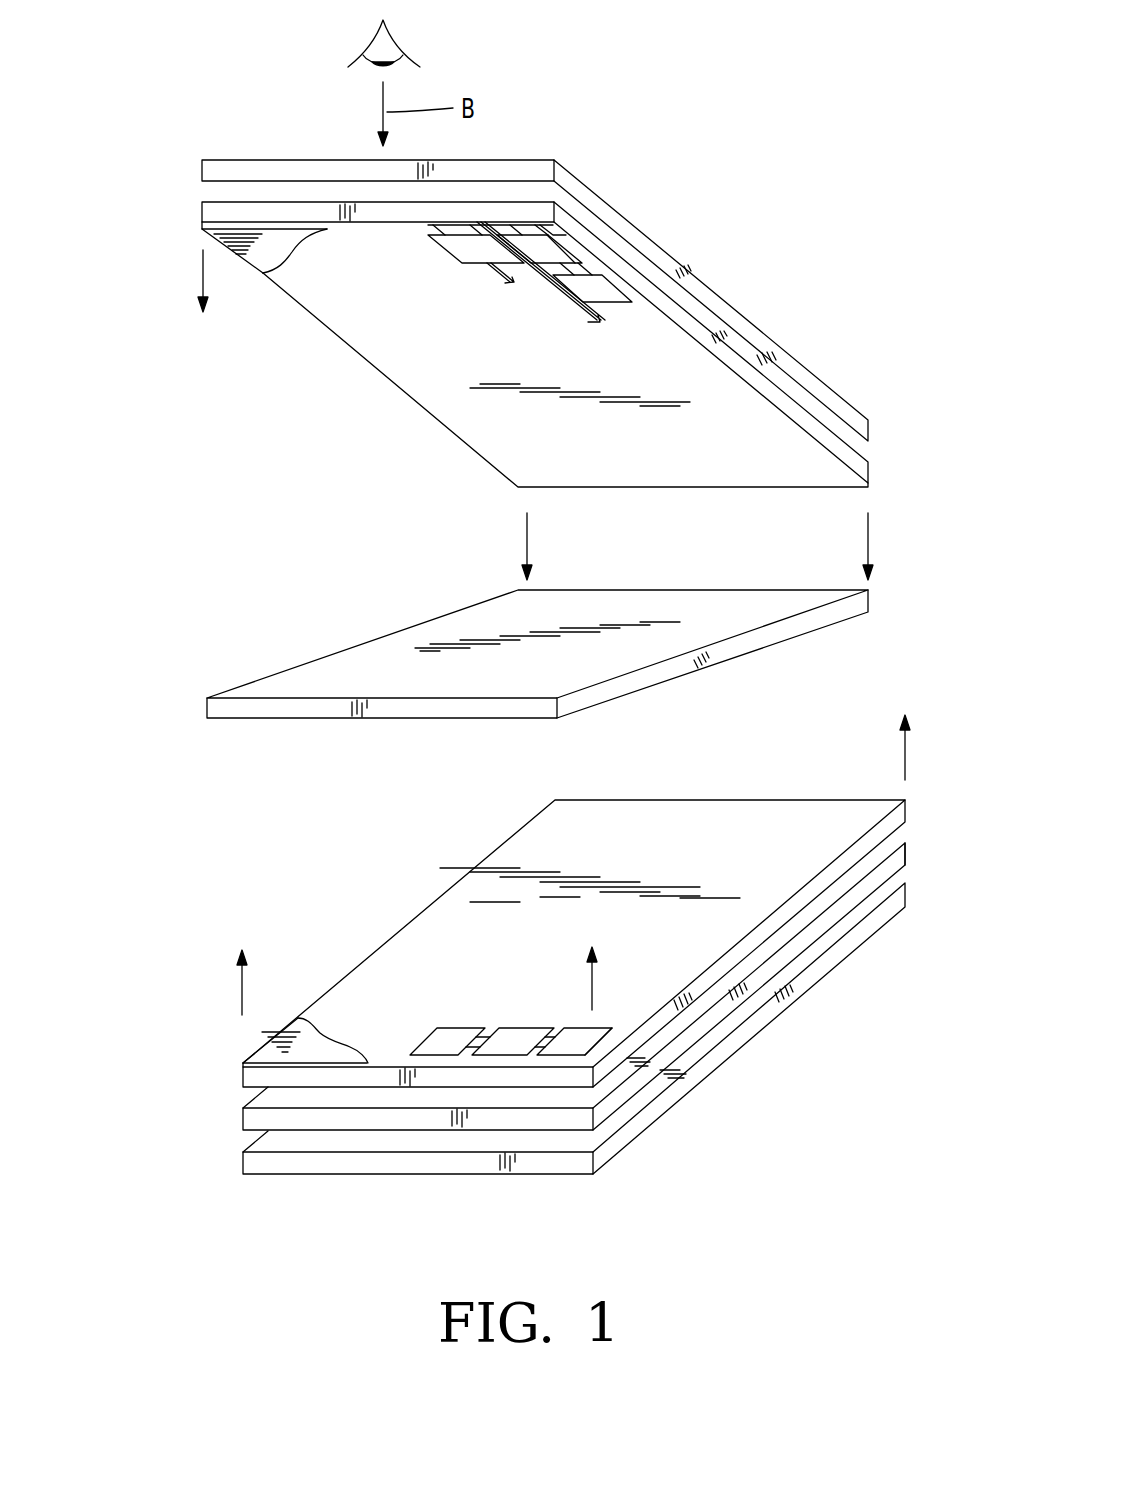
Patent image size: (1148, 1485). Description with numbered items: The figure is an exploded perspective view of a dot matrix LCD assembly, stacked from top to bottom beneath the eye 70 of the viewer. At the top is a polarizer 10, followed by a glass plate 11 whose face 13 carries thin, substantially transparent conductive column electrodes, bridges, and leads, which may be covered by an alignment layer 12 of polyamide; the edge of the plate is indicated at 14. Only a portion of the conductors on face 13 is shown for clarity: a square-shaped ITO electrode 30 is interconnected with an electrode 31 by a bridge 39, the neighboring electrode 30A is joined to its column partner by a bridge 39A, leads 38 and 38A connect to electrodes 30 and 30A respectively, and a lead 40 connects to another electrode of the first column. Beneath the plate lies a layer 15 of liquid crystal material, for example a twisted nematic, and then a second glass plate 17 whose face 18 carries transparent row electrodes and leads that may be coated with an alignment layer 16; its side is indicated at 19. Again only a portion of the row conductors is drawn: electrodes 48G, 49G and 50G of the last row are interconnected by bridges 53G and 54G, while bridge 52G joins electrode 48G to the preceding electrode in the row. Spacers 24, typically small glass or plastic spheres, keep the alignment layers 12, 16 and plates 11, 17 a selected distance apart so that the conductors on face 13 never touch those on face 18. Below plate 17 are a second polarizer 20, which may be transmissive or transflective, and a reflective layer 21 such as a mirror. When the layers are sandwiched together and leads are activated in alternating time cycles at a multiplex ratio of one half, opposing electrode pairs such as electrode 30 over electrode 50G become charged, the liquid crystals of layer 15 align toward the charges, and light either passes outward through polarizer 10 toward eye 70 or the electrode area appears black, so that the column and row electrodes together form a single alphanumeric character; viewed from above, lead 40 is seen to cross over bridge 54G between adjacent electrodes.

The eye 70 is at (400, 42).
The polarizer 10 is at (200, 155).
The glass plate 11 is at (200, 200).
The alignment layer 12 is at (228, 258).
The face 13 is at (323, 302).
The side edge 14 is at (792, 397).
The layer of liquid crystal material 15 is at (353, 640).
The alignment layer 16 is at (296, 1014).
The glass plate 17 is at (233, 1077).
The face 18 is at (460, 895).
The side edge 19 is at (800, 912).
The polarizer 20 is at (238, 1127).
The reflective layer 21 is at (238, 1172).
The spacers 24 is at (273, 1053).
The electrode 30 is at (563, 243).
The electrode 30A is at (457, 248).
The electrode 31 is at (610, 308).
The lead 38 is at (563, 247).
The lead 38A is at (437, 227).
The bridge 39 is at (577, 263).
The bridge 39A is at (490, 270).
The lead 40 is at (580, 310).
The electrode 48G is at (458, 1028).
The electrode 49G is at (522, 1037).
The electrode 50G is at (598, 1037).
The bridge 52G is at (430, 1032).
The bridge 53G is at (492, 1037).
The bridge 54G is at (555, 1037).